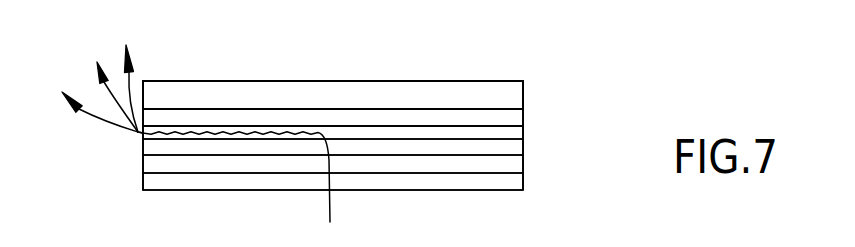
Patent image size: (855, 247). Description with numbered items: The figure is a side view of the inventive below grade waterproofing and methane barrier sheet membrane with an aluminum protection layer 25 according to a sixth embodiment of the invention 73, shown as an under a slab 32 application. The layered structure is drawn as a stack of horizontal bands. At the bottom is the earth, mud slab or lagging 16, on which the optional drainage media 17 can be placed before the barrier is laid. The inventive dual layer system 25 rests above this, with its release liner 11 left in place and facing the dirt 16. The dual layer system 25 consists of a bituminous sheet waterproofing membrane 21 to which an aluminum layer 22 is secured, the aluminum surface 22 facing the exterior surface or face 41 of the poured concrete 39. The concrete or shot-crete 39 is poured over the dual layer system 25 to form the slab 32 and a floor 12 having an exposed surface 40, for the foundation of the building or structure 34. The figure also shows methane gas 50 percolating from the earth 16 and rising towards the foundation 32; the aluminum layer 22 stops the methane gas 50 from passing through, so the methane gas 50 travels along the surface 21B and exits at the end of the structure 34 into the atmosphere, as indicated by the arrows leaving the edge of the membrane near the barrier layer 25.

The sixth embodiment of the invention 73 is at (609, 48).
The building or structure 34 is at (178, 81).
The floor 12 is at (250, 81).
The exposed surface 40 is at (320, 81).
The exterior surface or face 41 is at (370, 109).
The surface 21B is at (423, 126).
The slab or foundation 32 is at (463, 91).
The concrete or shotcrete 39 is at (512, 98).
The aluminum layer or sheet 22 is at (512, 120).
The bituminous sheet waterproofing membrane 21 is at (517, 133).
The release layer or release liner 11 is at (515, 145).
The optional drainage media 17 is at (515, 163).
The earth, mud slab or lagging 16 is at (515, 182).
The methane gas 50 is at (112, 98).
The inventive dual layer system 25 is at (124, 150).